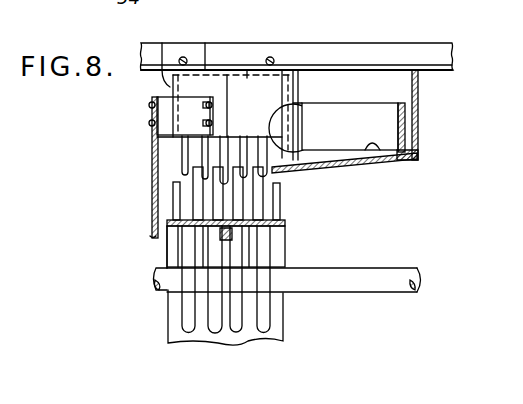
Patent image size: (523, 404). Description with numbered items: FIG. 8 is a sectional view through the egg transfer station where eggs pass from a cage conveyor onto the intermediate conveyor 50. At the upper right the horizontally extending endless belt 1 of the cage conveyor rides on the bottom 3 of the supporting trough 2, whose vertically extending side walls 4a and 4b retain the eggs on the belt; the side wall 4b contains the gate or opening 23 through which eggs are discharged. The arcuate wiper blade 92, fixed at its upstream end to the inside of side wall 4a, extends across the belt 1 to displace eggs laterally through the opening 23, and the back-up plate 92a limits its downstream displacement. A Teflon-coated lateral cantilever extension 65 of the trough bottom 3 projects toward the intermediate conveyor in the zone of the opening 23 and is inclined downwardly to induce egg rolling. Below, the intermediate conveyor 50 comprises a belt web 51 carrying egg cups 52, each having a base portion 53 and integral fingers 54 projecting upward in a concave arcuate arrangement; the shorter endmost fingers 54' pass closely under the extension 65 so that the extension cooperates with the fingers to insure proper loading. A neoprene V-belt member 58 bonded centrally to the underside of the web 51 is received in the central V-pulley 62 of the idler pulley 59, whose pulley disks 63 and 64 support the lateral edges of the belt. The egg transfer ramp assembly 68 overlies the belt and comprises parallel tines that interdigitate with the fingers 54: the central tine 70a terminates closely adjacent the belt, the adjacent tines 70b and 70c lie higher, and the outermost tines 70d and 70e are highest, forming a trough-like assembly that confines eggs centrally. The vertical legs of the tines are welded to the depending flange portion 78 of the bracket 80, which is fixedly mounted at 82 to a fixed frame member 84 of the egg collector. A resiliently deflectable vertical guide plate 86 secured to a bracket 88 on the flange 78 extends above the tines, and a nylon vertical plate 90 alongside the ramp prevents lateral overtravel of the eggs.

The endless belt 1 is at (378, 152).
The supporting trough 2 is at (419, 105).
The trough bottom 3 is at (401, 160).
The side wall 4a is at (420, 88).
The side wall 4b is at (292, 79).
The gate or opening 23 is at (284, 103).
The intermediate conveyor 50 is at (286, 234).
The web 51 is at (169, 244).
The egg cup 52 is at (153, 214).
The base portion 53 is at (286, 223).
The fingers 54 is at (183, 193).
The endmost fingers 54' is at (229, 194).
The V-belt member 58 is at (233, 233).
The upper idler pulley 59 is at (183, 300).
The central V-pulley 62 is at (280, 340).
The pulley disk 63 is at (190, 320).
The pulley disk 64 is at (270, 312).
The lateral cantilever extension 65 is at (273, 173).
The egg transfer ramp assembly 68 is at (293, 102).
The central tine 70a is at (266, 102).
The tine 70b is at (206, 162).
The tine 70c is at (277, 125).
The outermost tine 70d is at (204, 150).
The outermost tine 70e is at (347, 134).
The depending flange portion 78 is at (247, 78).
The bracket 80 is at (163, 41).
The mounting 82 is at (205, 44).
The fixed member 84 is at (380, 52).
The vertical guide plate 86 is at (227, 75).
The bracket 88 is at (193, 107).
The vertical plate 90 is at (148, 226).
The arcuate wiper blade 92 is at (376, 122).
The back-up plate 92a is at (407, 128).